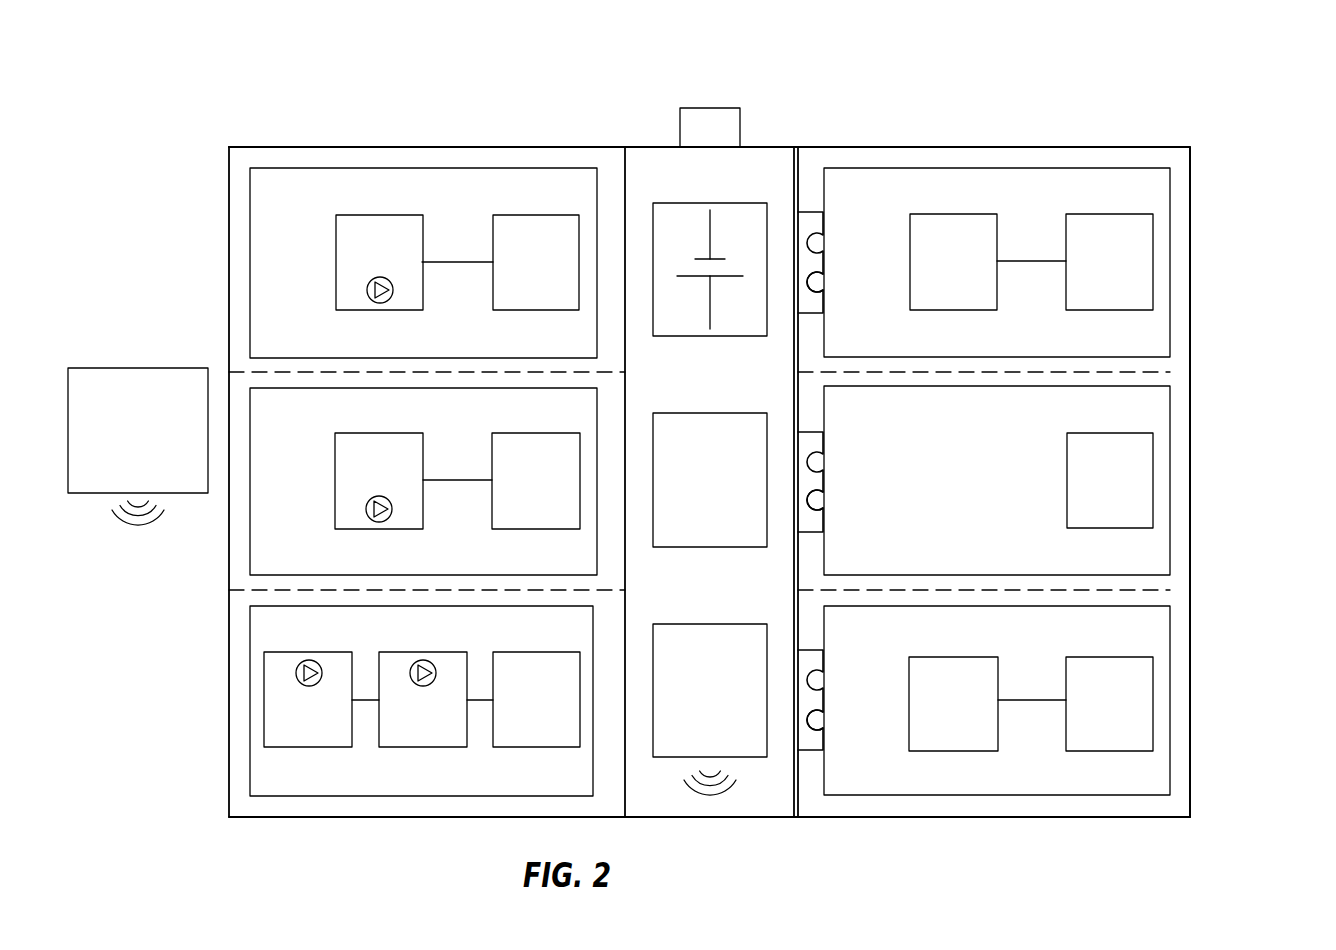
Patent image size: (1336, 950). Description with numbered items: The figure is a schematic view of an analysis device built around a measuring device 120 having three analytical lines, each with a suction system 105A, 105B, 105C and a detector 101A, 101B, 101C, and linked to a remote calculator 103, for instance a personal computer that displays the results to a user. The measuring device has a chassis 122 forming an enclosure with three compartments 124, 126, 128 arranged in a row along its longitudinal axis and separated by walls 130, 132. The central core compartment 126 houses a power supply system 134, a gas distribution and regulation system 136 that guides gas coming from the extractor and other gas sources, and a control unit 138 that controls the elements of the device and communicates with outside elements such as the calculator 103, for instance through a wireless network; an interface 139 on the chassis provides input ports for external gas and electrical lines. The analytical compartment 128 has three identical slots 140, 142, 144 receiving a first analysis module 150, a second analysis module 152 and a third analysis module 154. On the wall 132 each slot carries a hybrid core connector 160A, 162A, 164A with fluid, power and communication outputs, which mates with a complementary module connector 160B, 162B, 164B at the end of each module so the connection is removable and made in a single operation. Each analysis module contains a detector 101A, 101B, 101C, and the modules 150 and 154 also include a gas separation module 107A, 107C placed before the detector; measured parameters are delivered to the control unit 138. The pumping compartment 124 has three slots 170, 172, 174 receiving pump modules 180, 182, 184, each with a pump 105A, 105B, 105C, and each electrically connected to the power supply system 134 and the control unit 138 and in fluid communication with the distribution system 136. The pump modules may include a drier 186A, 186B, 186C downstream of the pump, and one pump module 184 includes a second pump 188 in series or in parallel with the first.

The measuring device 120 is at (196, 116).
The chassis 122 is at (1202, 141).
The third compartment or pumping compartment 124 is at (414, 160).
The first compartment or core compartment 126 is at (640, 162).
The second compartment or analytical compartment 128 is at (812, 162).
The wall 130 is at (622, 160).
The wall 132 is at (794, 160).
The power supply system 134 is at (723, 321).
The gas distribution and regulation system 136 is at (693, 494).
The control unit 138 is at (693, 702).
The interface 139 is at (717, 108).
The slot 140 is at (1176, 367).
The slot 142 is at (1176, 582).
The slot 144 is at (1176, 804).
The first analysis module 150 is at (1132, 195).
The second analysis module 152 is at (1132, 417).
The third analysis module 154 is at (1132, 685).
The core connector 160A is at (807, 220).
The module connector 160B is at (832, 262).
The core connector 162A is at (807, 443).
The module connector 162B is at (822, 502).
The core connector 164A is at (803, 740).
The module connector 164B is at (820, 718).
The slot 170 is at (243, 362).
The slot 172 is at (243, 580).
The slot 174 is at (243, 805).
The pump module 180 is at (288, 187).
The pump module 182 is at (263, 537).
The pump module 184 is at (263, 763).
The drier 186A is at (513, 272).
The drier 186B is at (513, 491).
The drier 186C is at (513, 719).
The second pump 188 is at (405, 719).
The remote calculator 103 is at (121, 442).
The suction system 105A is at (357, 272).
The suction system 105B is at (356, 491).
The suction system 105C is at (286, 719).
The gas separation module 107A is at (930, 272).
The gas separation module 107C is at (930, 714).
The detector 101A is at (1087, 272).
The detector 101B is at (1087, 492).
The detector 101C is at (1087, 714).